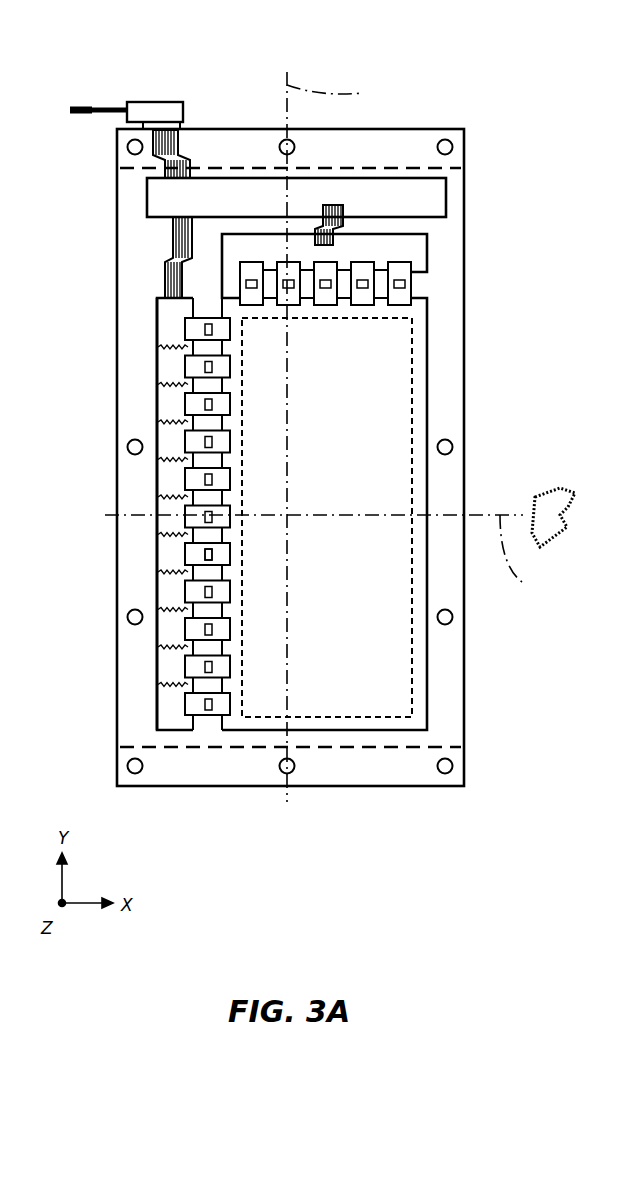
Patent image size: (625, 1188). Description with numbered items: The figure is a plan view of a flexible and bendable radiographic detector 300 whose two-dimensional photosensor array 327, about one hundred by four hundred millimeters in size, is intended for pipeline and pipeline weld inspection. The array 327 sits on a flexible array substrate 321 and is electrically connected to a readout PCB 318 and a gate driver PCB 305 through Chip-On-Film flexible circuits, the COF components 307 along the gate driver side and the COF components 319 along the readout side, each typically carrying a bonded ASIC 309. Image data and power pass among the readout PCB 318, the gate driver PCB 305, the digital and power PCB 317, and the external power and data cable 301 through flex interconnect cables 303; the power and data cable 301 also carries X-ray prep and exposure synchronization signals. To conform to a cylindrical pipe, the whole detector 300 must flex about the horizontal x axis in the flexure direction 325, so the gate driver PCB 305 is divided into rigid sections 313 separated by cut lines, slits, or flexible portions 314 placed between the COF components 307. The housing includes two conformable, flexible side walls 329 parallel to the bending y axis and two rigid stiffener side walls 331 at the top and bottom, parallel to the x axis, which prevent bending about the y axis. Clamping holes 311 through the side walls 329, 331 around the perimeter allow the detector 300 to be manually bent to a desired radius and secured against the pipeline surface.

The flexible detector 300 is at (620, 873).
The power and data cable 301 is at (83, 108).
The flex interconnect cables 303 is at (155, 163).
The gate driver PCB 305 is at (167, 325).
The COF components 307 is at (190, 473).
The ASIC 309 is at (200, 555).
The clamping holes 311 is at (135, 617).
The sections 313 is at (168, 368).
The flexible portions 314 is at (168, 458).
The digital and power PCB 317 is at (428, 202).
The readout PCB 318 is at (415, 247).
The COF components 319 is at (408, 273).
The array substrate 321 is at (428, 388).
The flexure direction 325 is at (535, 497).
The array 327 is at (412, 642).
The conformable side walls 329 is at (140, 693).
The stiffener side walls 331 is at (477, 130).